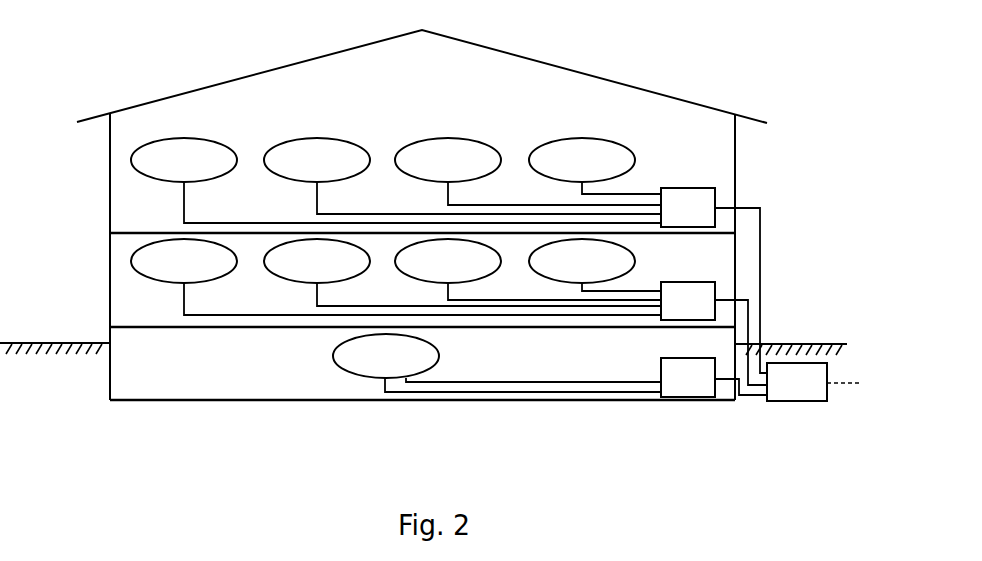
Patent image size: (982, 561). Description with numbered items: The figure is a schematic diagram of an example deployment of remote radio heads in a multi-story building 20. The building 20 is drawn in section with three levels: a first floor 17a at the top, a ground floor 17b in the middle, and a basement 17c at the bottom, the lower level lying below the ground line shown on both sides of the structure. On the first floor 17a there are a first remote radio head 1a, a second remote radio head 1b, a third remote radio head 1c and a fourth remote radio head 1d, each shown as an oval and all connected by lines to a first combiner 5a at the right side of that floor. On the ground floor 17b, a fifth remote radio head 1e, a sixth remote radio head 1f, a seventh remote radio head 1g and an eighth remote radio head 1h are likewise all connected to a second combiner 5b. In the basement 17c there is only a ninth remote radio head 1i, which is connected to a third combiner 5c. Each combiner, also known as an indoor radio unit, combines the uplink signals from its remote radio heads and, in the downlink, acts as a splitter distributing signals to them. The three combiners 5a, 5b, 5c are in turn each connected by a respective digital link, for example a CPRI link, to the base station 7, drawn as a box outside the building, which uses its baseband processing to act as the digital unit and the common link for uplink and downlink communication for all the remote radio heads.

The first remote radio head 1a is at (171, 172).
The second remote radio head 1b is at (304, 172).
The third remote radio head 1c is at (435, 172).
The fourth remote radio head 1d is at (569, 172).
The fifth remote radio head 1e is at (171, 273).
The sixth remote radio head 1f is at (306, 273).
The seventh remote radio head 1g is at (435, 273).
The eighth remote radio head 1h is at (569, 273).
The ninth remote radio head 1i is at (376, 368).
The first combiner 5a is at (674, 219).
The second combiner 5b is at (674, 312).
The third combiner 5c is at (674, 389).
The base station 7 is at (790, 394).
The first floor 17a is at (118, 189).
The ground floor 17b is at (118, 282).
The basement 17c is at (116, 384).
The multi-story building 20 is at (148, 101).